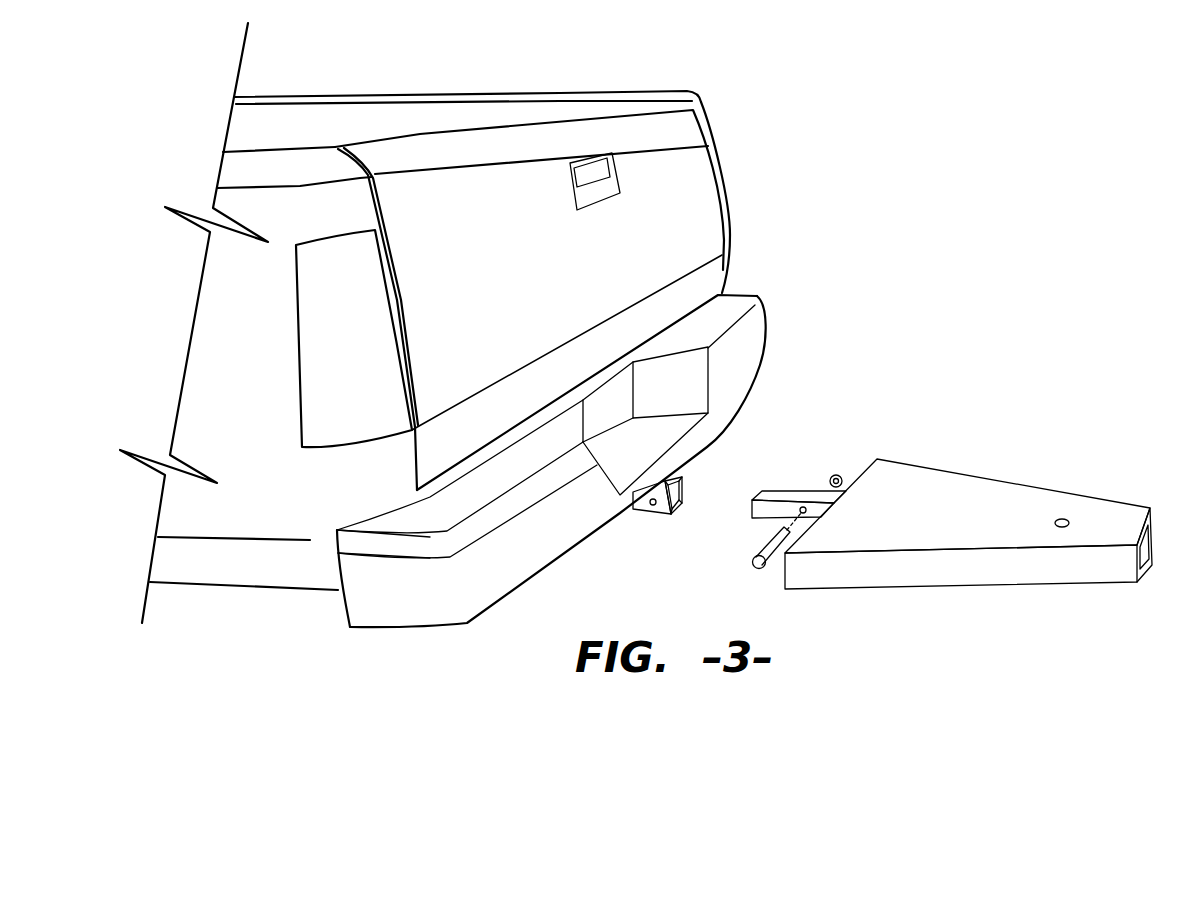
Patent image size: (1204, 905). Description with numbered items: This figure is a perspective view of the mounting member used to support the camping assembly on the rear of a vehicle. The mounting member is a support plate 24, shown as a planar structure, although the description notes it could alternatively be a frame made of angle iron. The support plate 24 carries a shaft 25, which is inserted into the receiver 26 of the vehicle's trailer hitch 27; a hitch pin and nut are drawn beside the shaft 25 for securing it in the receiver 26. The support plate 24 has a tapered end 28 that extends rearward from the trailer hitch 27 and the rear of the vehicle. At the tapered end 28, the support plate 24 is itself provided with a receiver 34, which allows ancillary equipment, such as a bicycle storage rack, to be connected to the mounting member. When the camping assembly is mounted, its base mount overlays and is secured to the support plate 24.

The support plate 24 is at (958, 493).
The shaft 25 is at (772, 498).
The receiver 26 is at (683, 493).
The trailer hitch 27 is at (645, 517).
The tapered end 28 is at (1153, 517).
The receiver 34 is at (1153, 538).